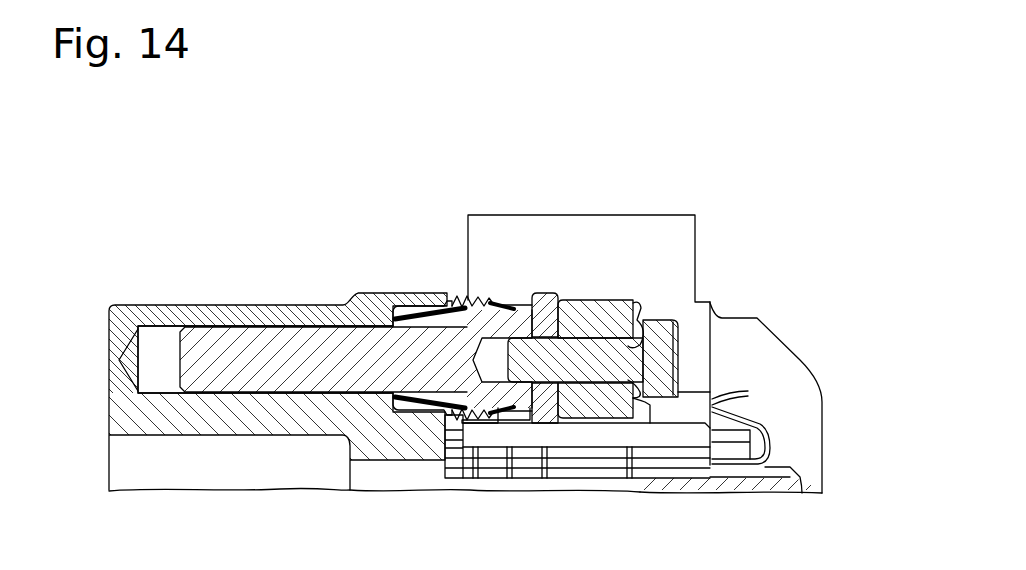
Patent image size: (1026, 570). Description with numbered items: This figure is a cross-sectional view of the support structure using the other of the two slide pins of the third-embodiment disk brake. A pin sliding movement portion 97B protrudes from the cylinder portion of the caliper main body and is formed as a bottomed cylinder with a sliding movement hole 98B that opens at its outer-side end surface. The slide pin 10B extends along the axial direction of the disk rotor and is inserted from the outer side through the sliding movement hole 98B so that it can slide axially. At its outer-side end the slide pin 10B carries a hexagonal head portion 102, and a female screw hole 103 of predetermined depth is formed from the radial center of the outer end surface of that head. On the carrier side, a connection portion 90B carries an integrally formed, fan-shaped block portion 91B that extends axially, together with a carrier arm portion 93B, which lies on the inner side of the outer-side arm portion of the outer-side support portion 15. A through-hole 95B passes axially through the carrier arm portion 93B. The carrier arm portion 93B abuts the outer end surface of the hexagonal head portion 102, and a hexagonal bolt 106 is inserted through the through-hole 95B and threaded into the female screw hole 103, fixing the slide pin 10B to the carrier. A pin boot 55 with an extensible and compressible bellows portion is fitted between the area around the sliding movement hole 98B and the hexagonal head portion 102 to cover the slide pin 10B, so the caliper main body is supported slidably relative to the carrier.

The pin sliding movement portion 97B is at (152, 315).
The sliding movement hole 98B is at (232, 333).
The slide pin 10B is at (312, 340).
The pin boot 55 is at (428, 305).
The female screw hole 103 is at (512, 345).
The block portion 91B is at (548, 235).
The connection portion 90B is at (586, 264).
The carrier arm portion 93B is at (612, 310).
The through-hole 95B is at (643, 318).
The hexagonal bolt 106 is at (665, 357).
The outer-side support portion 15 is at (779, 402).
The hexagonal head portion 102 is at (548, 425).